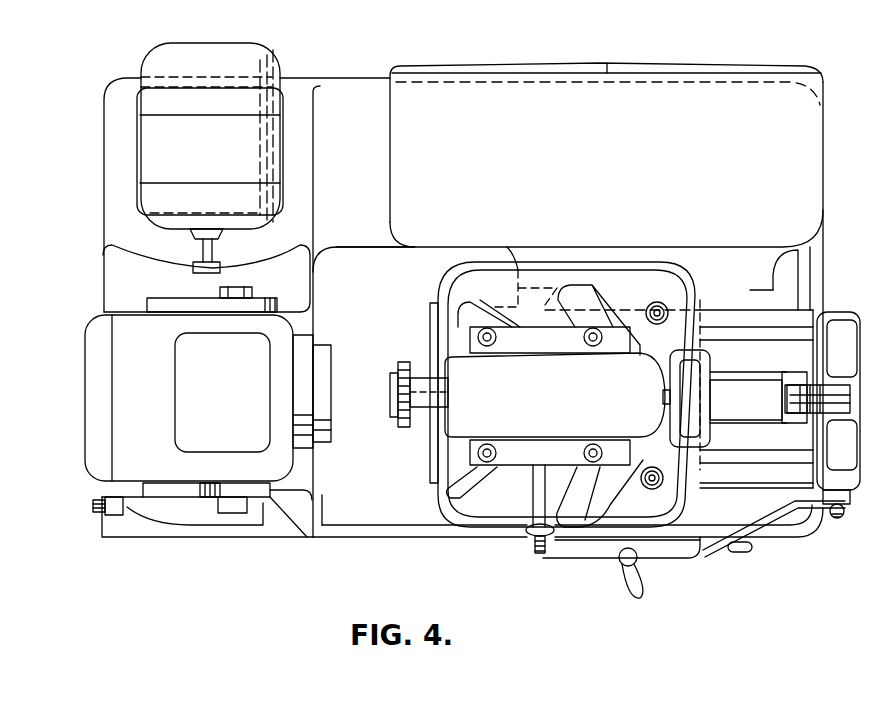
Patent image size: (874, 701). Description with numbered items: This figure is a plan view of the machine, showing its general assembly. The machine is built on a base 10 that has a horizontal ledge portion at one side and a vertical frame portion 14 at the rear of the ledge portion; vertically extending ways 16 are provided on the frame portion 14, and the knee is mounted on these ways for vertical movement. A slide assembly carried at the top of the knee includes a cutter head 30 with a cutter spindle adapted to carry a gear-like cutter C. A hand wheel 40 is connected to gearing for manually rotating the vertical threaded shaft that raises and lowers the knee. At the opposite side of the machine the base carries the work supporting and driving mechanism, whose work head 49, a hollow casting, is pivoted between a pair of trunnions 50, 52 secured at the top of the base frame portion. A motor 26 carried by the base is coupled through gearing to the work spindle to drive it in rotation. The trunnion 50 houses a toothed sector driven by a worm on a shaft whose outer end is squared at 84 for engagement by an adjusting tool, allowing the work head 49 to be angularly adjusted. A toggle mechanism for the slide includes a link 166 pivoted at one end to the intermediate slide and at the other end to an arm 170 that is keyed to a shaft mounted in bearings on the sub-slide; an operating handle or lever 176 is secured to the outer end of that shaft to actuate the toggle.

The base 10 is at (398, 543).
The vertical frame portion 14 is at (810, 183).
The vertically extending ways 16 is at (732, 290).
The motor 26 is at (275, 55).
The cutter head 30 is at (460, 435).
The hand wheel 40 is at (582, 559).
The work head 49 is at (85, 390).
The trunnion 50 is at (102, 518).
The trunnion 52 is at (108, 273).
The squared outer end of shaft 84 is at (93, 503).
The link 166 is at (746, 376).
The arm 170 is at (822, 388).
The operating handle or lever 176 is at (725, 557).
The gear-like cutter C is at (402, 362).